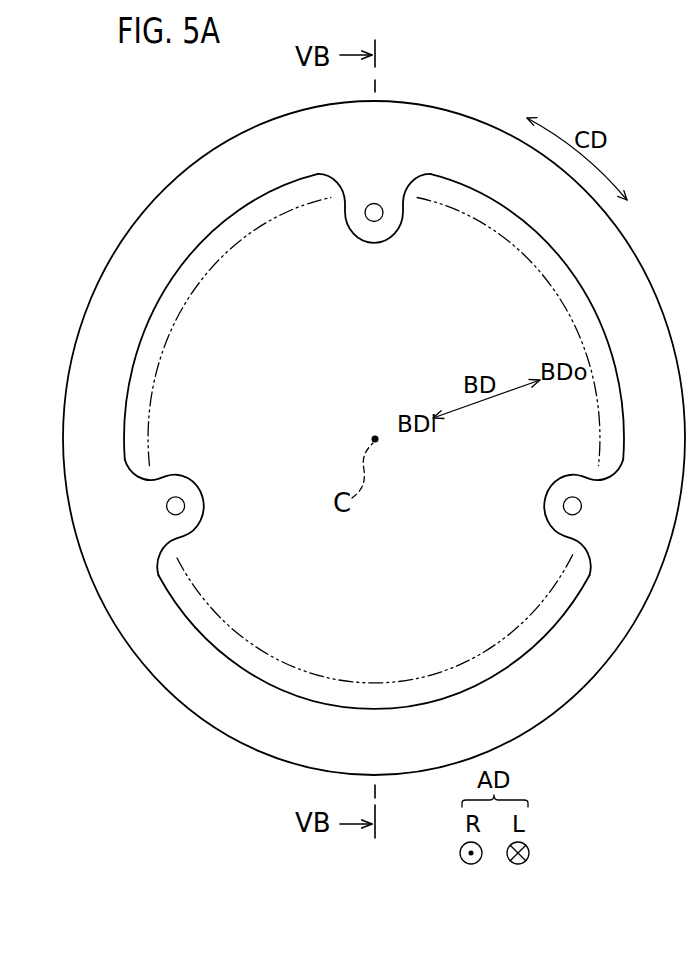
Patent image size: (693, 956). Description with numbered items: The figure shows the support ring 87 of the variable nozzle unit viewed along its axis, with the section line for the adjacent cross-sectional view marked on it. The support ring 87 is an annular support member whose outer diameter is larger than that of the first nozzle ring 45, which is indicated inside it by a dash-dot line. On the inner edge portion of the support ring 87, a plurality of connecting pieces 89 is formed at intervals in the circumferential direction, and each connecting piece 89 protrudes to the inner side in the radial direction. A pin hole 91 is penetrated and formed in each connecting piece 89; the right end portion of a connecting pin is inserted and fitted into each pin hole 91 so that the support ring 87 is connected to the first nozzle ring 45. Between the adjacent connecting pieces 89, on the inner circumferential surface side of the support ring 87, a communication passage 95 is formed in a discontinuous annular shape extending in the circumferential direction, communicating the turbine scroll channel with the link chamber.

The support ring 87 is at (443, 92).
The communication passage 95 is at (227, 237).
The connecting piece 89 is at (375, 240).
The pin hole 91 is at (380, 214).
The first nozzle ring 45 is at (173, 322).